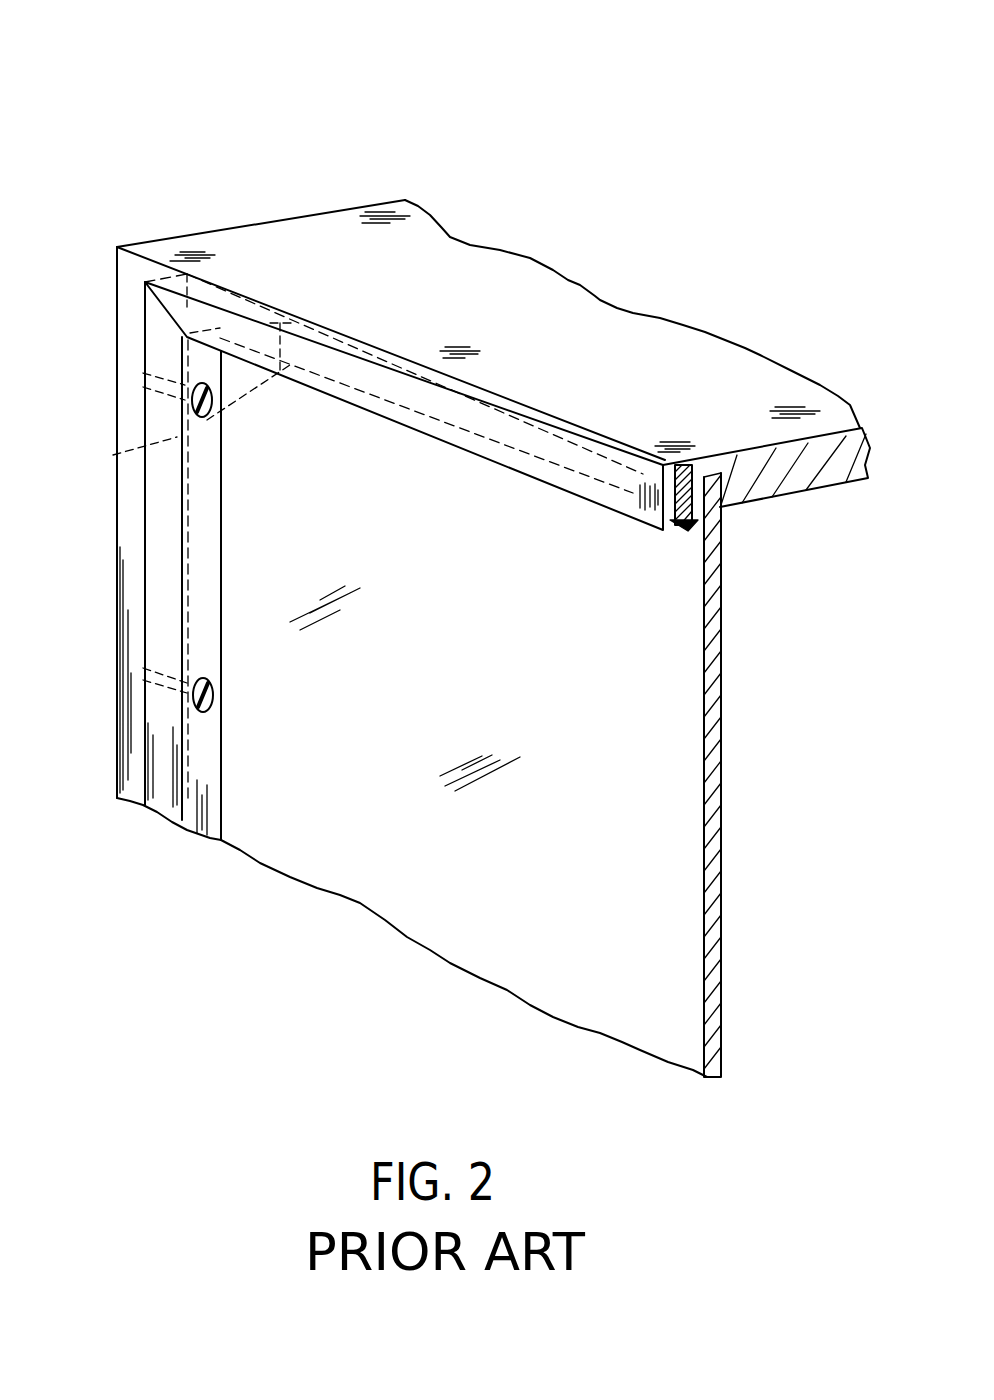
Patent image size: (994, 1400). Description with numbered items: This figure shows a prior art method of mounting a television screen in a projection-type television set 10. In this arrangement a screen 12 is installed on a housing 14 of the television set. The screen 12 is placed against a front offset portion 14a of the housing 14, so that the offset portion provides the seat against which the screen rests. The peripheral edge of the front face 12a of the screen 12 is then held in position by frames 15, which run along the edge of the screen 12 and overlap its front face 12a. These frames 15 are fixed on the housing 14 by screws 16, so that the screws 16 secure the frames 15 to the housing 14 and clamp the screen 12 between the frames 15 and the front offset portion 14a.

The projection-type television set 10 is at (605, 123).
The screen 12 is at (722, 762).
The front face 12a is at (707, 886).
The housing 14 is at (473, 283).
The front offset portion 14a is at (717, 520).
The frames 15 is at (485, 427).
The screws 16 is at (187, 407).